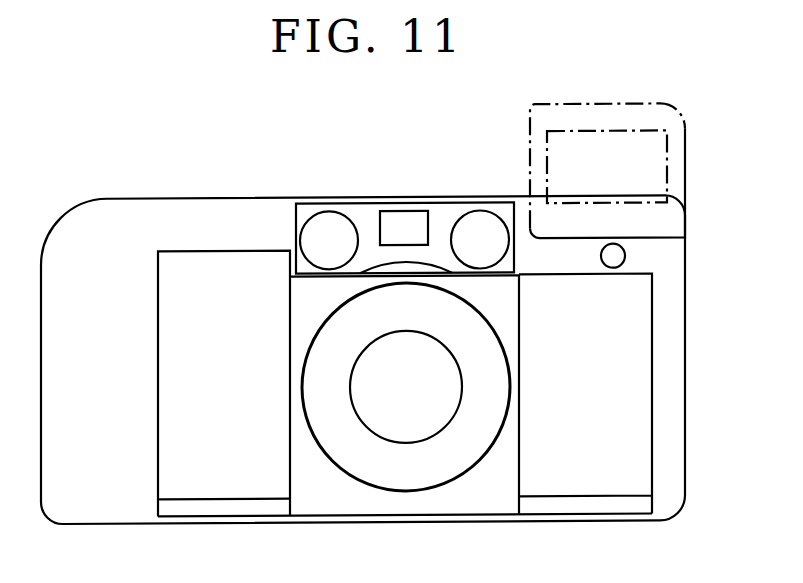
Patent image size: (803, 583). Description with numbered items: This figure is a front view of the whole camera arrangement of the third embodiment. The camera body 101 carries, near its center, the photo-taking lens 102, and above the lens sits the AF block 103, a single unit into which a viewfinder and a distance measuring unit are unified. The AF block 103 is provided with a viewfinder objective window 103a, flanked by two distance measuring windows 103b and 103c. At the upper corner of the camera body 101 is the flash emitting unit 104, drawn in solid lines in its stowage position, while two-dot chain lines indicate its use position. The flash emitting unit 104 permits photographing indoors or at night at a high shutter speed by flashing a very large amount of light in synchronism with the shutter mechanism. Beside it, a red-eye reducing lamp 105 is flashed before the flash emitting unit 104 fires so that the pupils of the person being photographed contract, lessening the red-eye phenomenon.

The camera body 101 is at (643, 395).
The photo-taking lens 102 is at (467, 460).
The AF block 103 is at (452, 207).
The viewfinder objective window 103a is at (400, 215).
The distance measuring window 103b is at (327, 225).
The distance measuring window 103c is at (487, 220).
The flash emitting unit 104 is at (667, 218).
The red-eye reducing lamp 105 is at (626, 258).